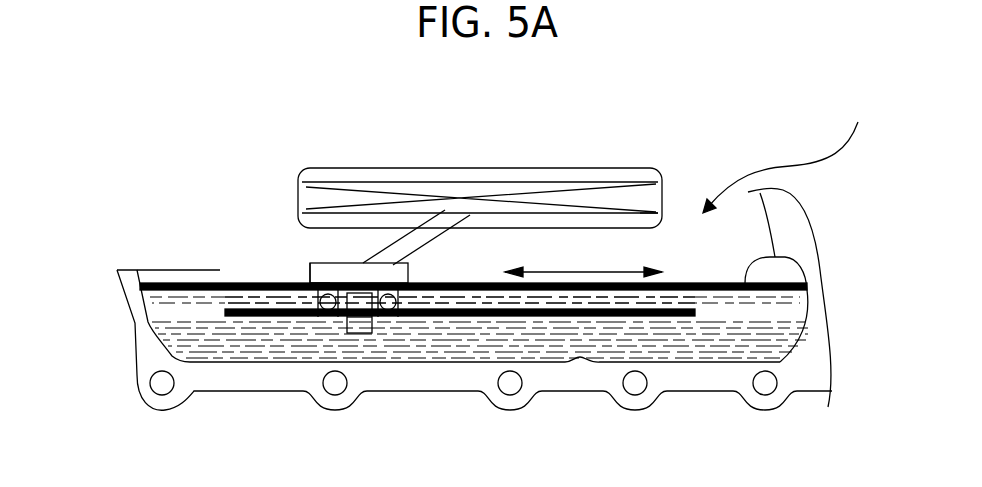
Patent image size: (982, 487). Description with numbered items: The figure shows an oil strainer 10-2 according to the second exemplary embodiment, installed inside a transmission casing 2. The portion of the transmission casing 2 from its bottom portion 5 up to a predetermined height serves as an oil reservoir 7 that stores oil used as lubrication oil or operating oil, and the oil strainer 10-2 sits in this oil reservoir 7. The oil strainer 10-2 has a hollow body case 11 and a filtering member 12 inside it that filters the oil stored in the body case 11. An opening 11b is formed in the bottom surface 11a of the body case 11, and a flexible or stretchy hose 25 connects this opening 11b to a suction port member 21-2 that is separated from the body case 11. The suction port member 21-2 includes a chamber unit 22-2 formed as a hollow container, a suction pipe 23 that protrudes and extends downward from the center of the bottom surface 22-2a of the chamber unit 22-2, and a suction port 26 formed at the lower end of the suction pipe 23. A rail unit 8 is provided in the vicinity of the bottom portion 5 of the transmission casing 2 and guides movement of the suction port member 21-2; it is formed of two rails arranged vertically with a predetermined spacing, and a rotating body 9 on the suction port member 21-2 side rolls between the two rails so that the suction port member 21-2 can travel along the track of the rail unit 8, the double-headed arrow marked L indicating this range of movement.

The transmission casing 2 is at (130, 325).
The bottom portion 5 is at (577, 357).
The oil reservoir 7 is at (785, 158).
The rail unit 8 is at (222, 277).
The rotating body 9 is at (303, 318).
The oil strainer 10-2 is at (611, 165).
The body case 11 is at (417, 168).
The bottom surface 11a is at (573, 228).
The opening 11b is at (433, 228).
The filtering member 12 is at (312, 200).
The suction port member 21-2 is at (310, 275).
The chamber unit 22-2 is at (409, 268).
The bottom surface 22-2a is at (313, 284).
The suction pipe 23 is at (372, 322).
The hose 25 is at (383, 257).
The suction port 26 is at (370, 335).
The length L is at (787, 257).